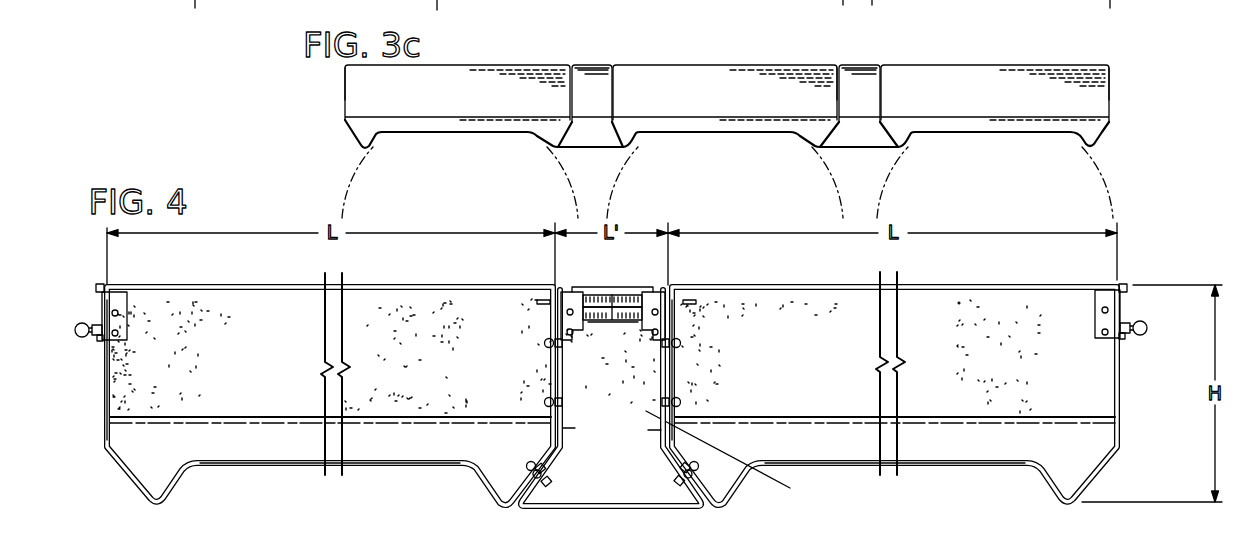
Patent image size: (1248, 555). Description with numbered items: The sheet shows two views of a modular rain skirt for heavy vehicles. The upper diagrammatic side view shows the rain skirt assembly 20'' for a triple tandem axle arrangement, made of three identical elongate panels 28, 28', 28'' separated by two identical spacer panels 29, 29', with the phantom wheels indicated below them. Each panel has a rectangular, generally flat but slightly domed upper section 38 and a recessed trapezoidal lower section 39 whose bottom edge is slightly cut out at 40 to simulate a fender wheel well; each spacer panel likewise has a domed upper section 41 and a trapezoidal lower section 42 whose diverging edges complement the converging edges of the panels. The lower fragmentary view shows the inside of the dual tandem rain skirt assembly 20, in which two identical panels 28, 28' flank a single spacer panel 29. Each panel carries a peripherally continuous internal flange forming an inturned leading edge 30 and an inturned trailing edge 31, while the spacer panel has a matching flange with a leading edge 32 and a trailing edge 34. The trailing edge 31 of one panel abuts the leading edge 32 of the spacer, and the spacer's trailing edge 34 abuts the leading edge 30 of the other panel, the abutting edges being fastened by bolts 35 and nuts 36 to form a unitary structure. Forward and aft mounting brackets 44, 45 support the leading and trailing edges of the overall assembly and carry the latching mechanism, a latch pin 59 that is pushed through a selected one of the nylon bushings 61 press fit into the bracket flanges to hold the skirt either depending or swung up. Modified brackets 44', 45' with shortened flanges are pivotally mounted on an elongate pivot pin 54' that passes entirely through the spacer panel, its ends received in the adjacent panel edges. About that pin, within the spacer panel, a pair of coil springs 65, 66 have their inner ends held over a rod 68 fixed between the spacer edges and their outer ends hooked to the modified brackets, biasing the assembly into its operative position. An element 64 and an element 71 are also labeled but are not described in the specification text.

In FIG. 4, the rain skirt assembly 20 is at (612, 373).
In FIG. 3C, the rain skirt assembly 20'' is at (723, 115).
In FIG. 3C, the panel 28 is at (457, 92).
In FIG. 4, the panel 28 is at (894, 396).
In FIG. 3C, the panel 28' is at (725, 92).
In FIG. 4, the panel 28' is at (330, 396).
In FIG. 3C, the panel 28'' is at (995, 93).
In FIG. 3C, the spacer panel 29 is at (616, 54).
In FIG. 4, the spacer panel 29 is at (827, 412).
In FIG. 3C, the spacer panel 29' is at (887, 54).
In FIG. 4, the inturned leading edge 30 is at (557, 383).
In FIG. 4, the inturned trailing edge 31 is at (107, 395).
In FIG. 4, the inturned leading edge 32 is at (660, 432).
In FIG. 4, the inturned trailing edge 34 is at (563, 430).
In FIG. 4, the bolts 35 is at (548, 345).
In FIG. 4, the nuts 36 is at (657, 353).
In FIG. 3C, the upper section 38 is at (352, 90).
In FIG. 3C, the lower section 39 is at (358, 128).
In FIG. 3C, the cut out 40 is at (475, 132).
In FIG. 4, the cut out 40 is at (285, 465).
In FIG. 3C, the upper section 41 is at (585, 72).
In FIG. 3C, the lower section 42 is at (602, 143).
In FIG. 4, the forward mounting bracket 44 is at (1132, 346).
In FIG. 4, the modified forward mounting bracket 44' is at (524, 323).
In FIG. 4, the aft mounting bracket 45 is at (144, 298).
In FIG. 4, the modified aft mounting bracket 45' is at (701, 322).
In FIG. 4, the elongate pivot pin 54' is at (644, 282).
In FIG. 4, the latch pin 59 is at (93, 326).
In FIG. 4, the nylon bushings 61 is at (96, 288).
In FIG. 4, the ball knob 64 is at (82, 338).
In FIG. 4, the coil spring 65 is at (622, 295).
In FIG. 4, the coil spring 66 is at (597, 295).
In FIG. 4, the rod 68 is at (627, 323).
In FIG. 4, the diagonal brace 71 is at (200, 408).